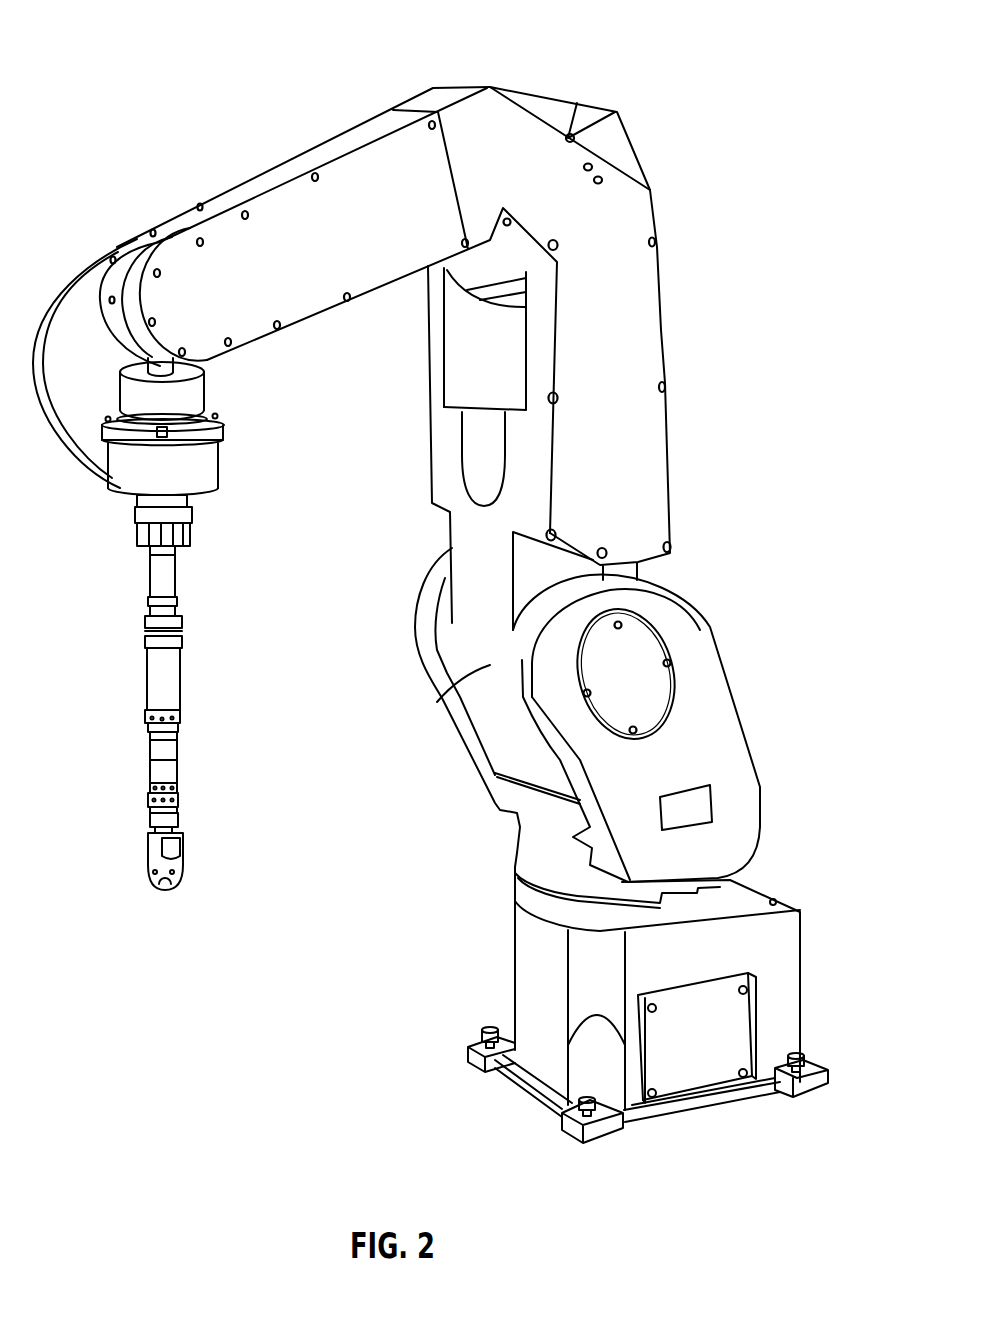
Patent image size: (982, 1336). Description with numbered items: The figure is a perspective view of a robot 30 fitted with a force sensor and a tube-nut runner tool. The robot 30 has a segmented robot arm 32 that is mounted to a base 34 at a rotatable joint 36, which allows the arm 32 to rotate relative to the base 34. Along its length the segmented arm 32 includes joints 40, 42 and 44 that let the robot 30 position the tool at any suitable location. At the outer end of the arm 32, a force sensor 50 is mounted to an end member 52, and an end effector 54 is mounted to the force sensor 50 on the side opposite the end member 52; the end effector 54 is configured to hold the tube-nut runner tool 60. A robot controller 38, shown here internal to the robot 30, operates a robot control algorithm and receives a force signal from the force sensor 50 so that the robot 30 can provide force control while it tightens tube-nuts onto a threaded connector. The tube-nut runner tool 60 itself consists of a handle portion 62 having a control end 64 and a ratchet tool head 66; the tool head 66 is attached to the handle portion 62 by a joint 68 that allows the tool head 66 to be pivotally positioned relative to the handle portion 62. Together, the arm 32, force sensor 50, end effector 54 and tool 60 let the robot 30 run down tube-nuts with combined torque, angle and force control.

The robot 30 is at (597, 38).
The segmented robot arm 32 is at (666, 330).
The base 34 is at (790, 975).
The rotatable joint 36 is at (547, 842).
The robot controller 38 is at (712, 803).
The joint 40 is at (483, 667).
The joint 42 is at (624, 152).
The joint 44 is at (140, 380).
The force sensor 50 is at (113, 468).
The end member 52 is at (197, 398).
The end effector 54 is at (190, 527).
The tube-nut runner tool 60 is at (178, 690).
The handle portion 62 is at (160, 747).
The control end 64 is at (170, 580).
The ratchet tool head 66 is at (147, 860).
The joint 68 is at (177, 817).